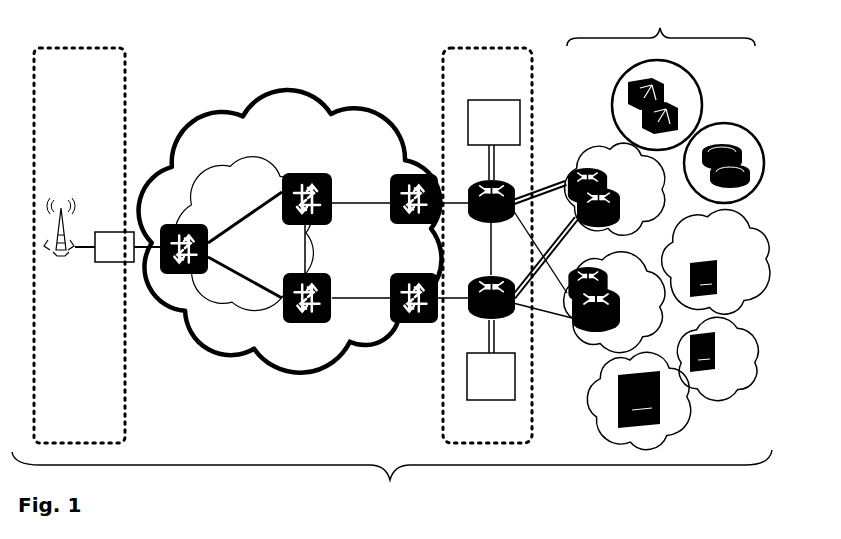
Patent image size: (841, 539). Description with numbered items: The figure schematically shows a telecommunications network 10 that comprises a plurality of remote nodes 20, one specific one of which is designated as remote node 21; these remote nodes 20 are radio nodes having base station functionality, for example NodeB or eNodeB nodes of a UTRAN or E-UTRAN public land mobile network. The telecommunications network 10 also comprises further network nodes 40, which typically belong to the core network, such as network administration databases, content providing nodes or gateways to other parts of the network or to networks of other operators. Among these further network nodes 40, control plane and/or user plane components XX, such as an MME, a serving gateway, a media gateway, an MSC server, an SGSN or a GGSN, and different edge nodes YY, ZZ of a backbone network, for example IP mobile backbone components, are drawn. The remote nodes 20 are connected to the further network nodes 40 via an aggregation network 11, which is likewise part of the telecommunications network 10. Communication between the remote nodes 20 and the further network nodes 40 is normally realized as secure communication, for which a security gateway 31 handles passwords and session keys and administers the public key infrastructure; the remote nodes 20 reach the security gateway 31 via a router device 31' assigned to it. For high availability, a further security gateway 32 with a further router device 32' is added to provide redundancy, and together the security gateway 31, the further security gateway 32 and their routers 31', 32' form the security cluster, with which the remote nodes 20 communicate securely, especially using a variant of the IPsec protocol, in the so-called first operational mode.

The telecommunications network 10 is at (392, 480).
The remote nodes 20 is at (97, 245).
The remote node 21 is at (70, 226).
The aggregation network 11 is at (303, 231).
The security gateway 31 is at (494, 140).
The router device 31' is at (511, 228).
The further security gateway 32 is at (491, 360).
The further router device 32' is at (519, 278).
The further network nodes 40 is at (668, 231).
The control plane and/or user plane components XX is at (688, 131).
The edge node of backbone network YY is at (615, 189).
The edge node of backbone network ZZ is at (614, 302).